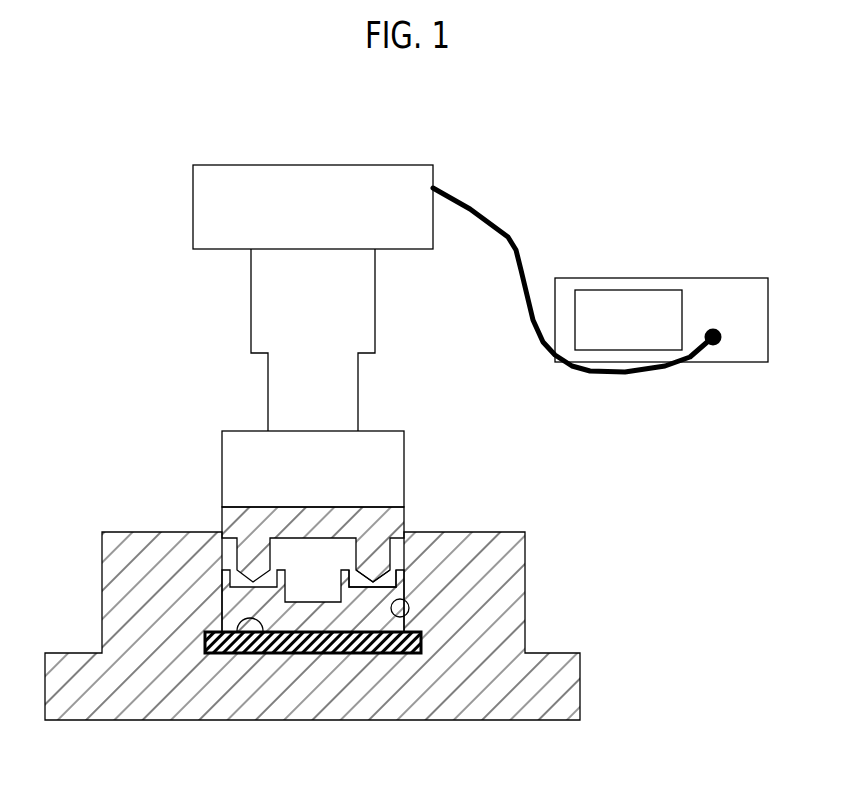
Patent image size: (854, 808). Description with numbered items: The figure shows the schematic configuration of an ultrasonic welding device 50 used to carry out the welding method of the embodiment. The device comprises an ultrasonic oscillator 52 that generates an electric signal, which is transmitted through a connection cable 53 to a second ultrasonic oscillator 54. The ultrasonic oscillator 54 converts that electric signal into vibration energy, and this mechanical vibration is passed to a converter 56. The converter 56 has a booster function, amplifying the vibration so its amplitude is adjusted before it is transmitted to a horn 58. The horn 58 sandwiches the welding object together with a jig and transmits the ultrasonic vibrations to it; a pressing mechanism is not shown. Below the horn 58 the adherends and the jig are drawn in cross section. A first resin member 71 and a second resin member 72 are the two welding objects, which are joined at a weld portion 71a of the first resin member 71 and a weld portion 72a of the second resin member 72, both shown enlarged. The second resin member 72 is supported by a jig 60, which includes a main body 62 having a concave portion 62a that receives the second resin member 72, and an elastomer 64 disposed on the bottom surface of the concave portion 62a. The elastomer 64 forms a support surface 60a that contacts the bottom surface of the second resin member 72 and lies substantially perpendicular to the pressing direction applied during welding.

The ultrasonic welding device 50 is at (433, 138).
The ultrasonic oscillator 52 is at (768, 333).
The connection cable 53 is at (510, 236).
The ultrasonic oscillator 54 is at (433, 239).
The converter 56 is at (375, 302).
The horn 58 is at (222, 440).
The jig 60 is at (518, 517).
The support surface 60a is at (236, 645).
The main body 62 is at (527, 576).
The concave portion 62a is at (405, 617).
The elastomer 64 is at (422, 639).
The first resin member 71 is at (225, 522).
The weld portion 71a is at (378, 579).
The second resin member 72 is at (222, 608).
The weld portion 72a is at (392, 585).